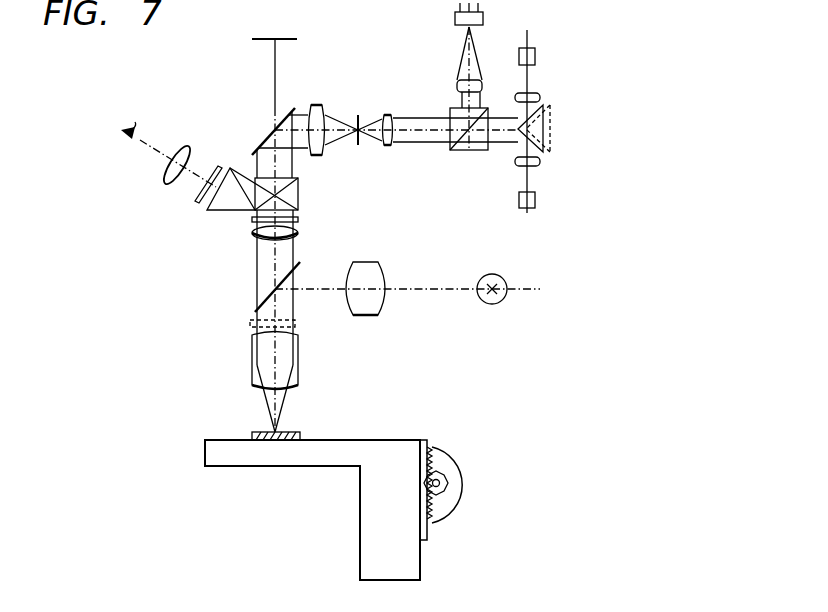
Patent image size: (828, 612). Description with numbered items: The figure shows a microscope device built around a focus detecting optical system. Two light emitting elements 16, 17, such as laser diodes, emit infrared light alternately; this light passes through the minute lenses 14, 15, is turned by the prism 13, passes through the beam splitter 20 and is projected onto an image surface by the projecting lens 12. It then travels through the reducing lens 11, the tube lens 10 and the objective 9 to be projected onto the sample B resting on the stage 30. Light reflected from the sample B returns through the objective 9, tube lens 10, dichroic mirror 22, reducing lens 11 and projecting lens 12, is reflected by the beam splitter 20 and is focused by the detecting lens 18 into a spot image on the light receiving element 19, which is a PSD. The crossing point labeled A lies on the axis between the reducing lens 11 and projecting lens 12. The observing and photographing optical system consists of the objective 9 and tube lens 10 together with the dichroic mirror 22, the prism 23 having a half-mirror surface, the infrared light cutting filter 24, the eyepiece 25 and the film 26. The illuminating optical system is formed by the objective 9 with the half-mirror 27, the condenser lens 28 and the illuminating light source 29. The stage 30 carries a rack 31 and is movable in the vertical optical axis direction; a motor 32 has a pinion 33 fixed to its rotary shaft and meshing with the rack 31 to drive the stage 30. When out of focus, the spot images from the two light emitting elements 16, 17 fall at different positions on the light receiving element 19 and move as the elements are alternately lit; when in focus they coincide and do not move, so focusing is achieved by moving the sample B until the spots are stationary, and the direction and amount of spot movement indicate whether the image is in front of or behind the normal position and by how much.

The objective 9 is at (300, 345).
The tube lens 10 is at (250, 235).
The reducing lens 11 is at (320, 158).
The projecting lens 12 is at (387, 113).
The prism 13 is at (552, 128).
The minute lens 14 is at (542, 162).
The minute lens 15 is at (542, 97).
The light emitting element 16 is at (538, 200).
The light emitting element 17 is at (538, 57).
The detecting lens 18 is at (455, 82).
The light receiving element 19 is at (485, 18).
The beam splitter 20 is at (465, 152).
The dichroic mirror 22 is at (295, 107).
The prism having a half-mirror surface 23 is at (210, 214).
The infrared light cutting filter 24 is at (196, 205).
The eyepiece 25 is at (190, 147).
The film 26 is at (283, 36).
The half-mirror 27 is at (253, 311).
The condenser lens 28 is at (365, 262).
The illuminating light source 29 is at (490, 274).
The stage 30 is at (295, 458).
The rack 31 is at (423, 438).
The motor 32 is at (450, 456).
The pinion 33 is at (448, 486).
The focal point A is at (361, 147).
The sample B is at (300, 432).